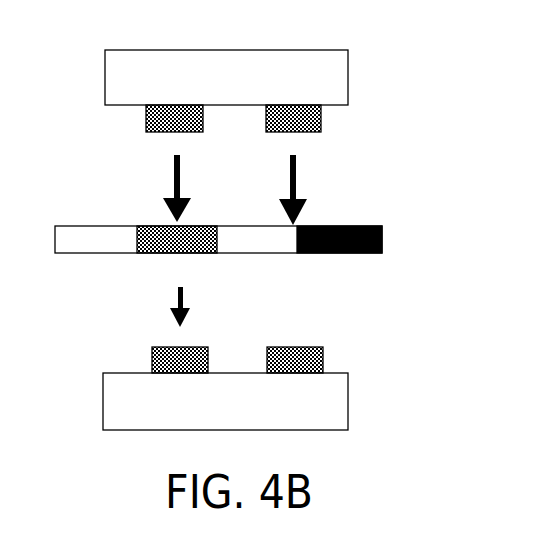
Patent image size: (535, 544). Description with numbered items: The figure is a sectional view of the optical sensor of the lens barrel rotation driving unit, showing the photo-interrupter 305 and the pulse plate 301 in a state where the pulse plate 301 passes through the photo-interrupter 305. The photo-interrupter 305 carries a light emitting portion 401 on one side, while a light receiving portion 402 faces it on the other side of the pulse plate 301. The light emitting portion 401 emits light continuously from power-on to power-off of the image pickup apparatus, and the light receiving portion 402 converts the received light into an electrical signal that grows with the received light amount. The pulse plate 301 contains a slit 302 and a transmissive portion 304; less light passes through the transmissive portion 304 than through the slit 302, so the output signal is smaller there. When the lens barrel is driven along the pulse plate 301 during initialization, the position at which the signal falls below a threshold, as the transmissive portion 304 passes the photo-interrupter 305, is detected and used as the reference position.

The pulse plate 301 is at (93, 247).
The slit 302 is at (383, 238).
The transmissive portion 304 is at (155, 240).
The photo-interrupter 305 is at (227, 50).
The light emitting portion 401 is at (170, 124).
The light receiving portion 402 is at (178, 356).